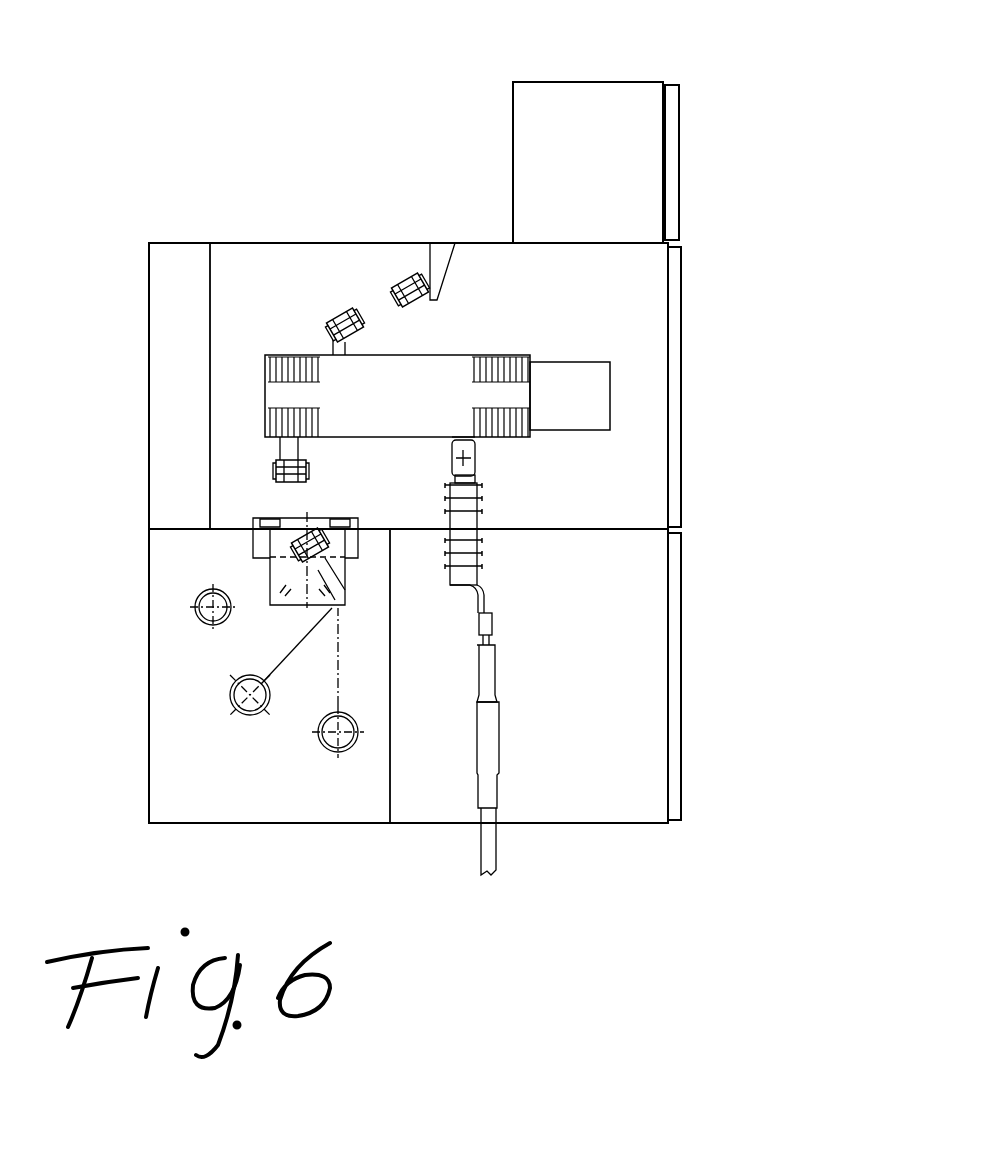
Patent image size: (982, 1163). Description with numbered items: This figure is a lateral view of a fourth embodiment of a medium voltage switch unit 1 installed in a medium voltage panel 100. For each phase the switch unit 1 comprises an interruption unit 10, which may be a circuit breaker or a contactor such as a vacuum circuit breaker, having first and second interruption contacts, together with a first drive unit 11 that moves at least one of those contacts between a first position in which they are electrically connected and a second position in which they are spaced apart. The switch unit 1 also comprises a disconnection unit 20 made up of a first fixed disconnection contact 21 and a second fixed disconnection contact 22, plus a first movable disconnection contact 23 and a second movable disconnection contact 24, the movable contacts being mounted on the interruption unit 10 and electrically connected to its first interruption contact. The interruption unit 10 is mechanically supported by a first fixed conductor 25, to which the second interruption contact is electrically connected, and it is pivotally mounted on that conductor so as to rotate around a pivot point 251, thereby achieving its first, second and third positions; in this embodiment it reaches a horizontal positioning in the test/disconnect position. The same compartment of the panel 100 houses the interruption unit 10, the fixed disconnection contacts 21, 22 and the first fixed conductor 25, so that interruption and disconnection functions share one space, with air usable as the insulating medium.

The medium voltage panel 100 is at (196, 88).
The medium voltage switch unit 1 is at (247, 320).
The disconnection unit 20 is at (512, 324).
The interruption unit 10 is at (386, 424).
The first drive unit 11 is at (570, 416).
The first fixed disconnection contact 21 is at (405, 278).
The first movable disconnection contact 23 is at (340, 312).
The second movable disconnection contact 24 is at (275, 468).
The second fixed disconnection contact 22 is at (300, 548).
The first fixed conductor 25 is at (475, 470).
The pivot point 251 is at (470, 457).